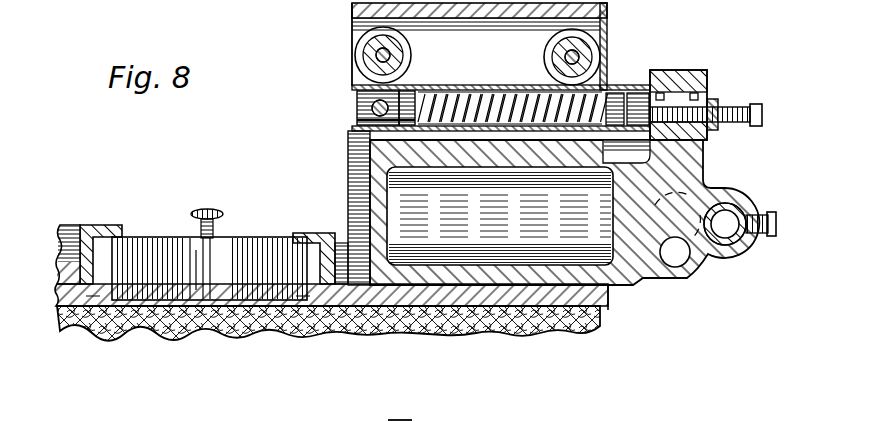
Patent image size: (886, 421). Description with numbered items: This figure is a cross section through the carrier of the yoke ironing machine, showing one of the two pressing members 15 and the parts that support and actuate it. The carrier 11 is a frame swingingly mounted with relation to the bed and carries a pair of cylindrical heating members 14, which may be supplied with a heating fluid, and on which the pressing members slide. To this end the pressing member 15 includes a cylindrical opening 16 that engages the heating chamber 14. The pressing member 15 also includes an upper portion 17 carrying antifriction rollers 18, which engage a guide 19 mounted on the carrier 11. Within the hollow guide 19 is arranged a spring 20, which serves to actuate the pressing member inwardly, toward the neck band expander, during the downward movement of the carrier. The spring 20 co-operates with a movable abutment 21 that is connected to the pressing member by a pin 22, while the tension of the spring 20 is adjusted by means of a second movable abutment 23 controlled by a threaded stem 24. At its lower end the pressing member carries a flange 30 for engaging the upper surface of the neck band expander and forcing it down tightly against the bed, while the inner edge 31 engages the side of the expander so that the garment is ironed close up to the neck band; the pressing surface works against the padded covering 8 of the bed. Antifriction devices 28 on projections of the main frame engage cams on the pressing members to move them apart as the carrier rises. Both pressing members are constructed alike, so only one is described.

The padded covering 8 is at (328, 336).
The carrier 11 is at (719, 260).
The heating member 14 is at (613, 287).
The pressing member 15 is at (56, 318).
The cylindrical opening 16 is at (360, 184).
The upper portion 17 is at (358, 8).
The antifriction rollers 18 is at (402, 54).
The guide 19 is at (455, 85).
The spring 20 is at (503, 89).
The movable abutment 21 is at (362, 118).
The pin 22 is at (362, 100).
The movable abutment 23 is at (637, 98).
The threaded stem 24 is at (738, 110).
The antifriction devices 28 is at (450, 417).
The flange 30 is at (110, 226).
The inner edge 31 is at (90, 296).